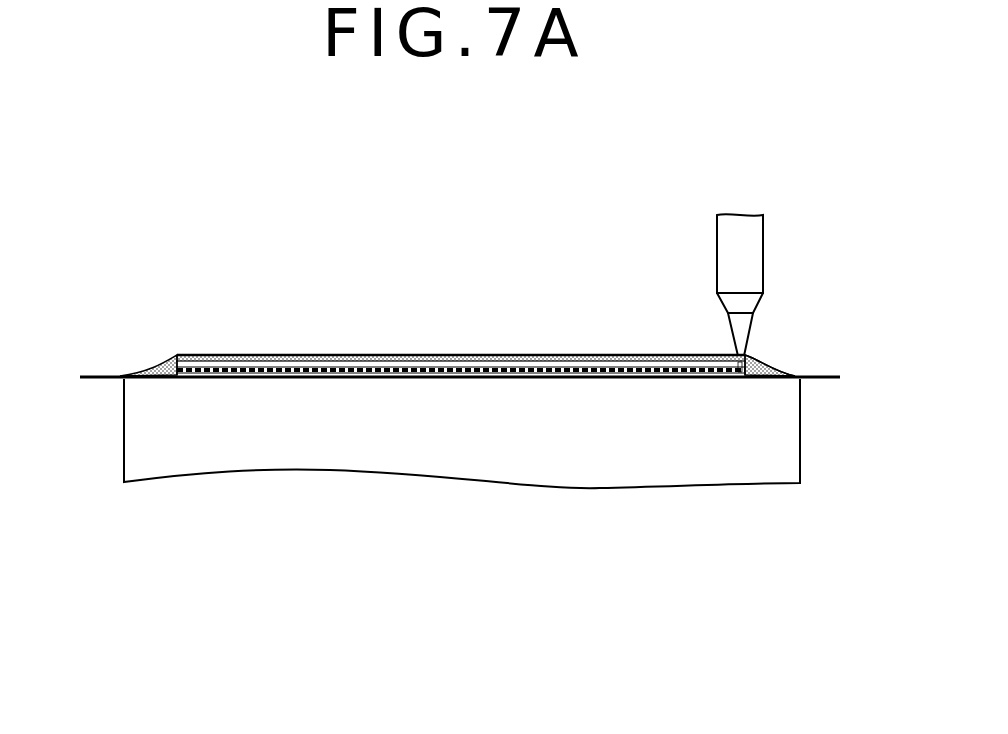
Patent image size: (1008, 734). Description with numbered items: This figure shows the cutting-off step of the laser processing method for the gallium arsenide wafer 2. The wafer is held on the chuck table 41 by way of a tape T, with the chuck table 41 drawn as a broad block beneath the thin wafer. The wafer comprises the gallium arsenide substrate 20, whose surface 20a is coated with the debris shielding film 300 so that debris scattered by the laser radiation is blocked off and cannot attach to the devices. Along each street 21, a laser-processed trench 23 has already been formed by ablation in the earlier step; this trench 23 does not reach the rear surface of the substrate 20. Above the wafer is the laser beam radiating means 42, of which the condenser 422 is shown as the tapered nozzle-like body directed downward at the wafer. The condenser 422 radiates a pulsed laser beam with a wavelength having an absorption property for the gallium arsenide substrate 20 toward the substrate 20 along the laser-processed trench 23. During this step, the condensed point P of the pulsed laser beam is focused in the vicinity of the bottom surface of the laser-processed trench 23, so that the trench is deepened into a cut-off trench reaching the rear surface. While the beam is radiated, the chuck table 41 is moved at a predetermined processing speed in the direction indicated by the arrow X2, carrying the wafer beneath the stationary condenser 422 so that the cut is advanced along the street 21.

The gallium arsenide wafer 2 is at (457, 261).
The gallium arsenide substrate 20 is at (567, 356).
The surface 20a is at (408, 356).
The street 21 is at (756, 350).
The laser-processed trench 23 is at (326, 366).
The debris shielding film 300 is at (224, 353).
The chuck table 41 is at (330, 471).
The laser beam radiating means 42 is at (799, 245).
The condenser 422 is at (758, 235).
The condensed point P is at (740, 370).
The tape T is at (108, 378).
The processing feeding direction X2 is at (410, 540).